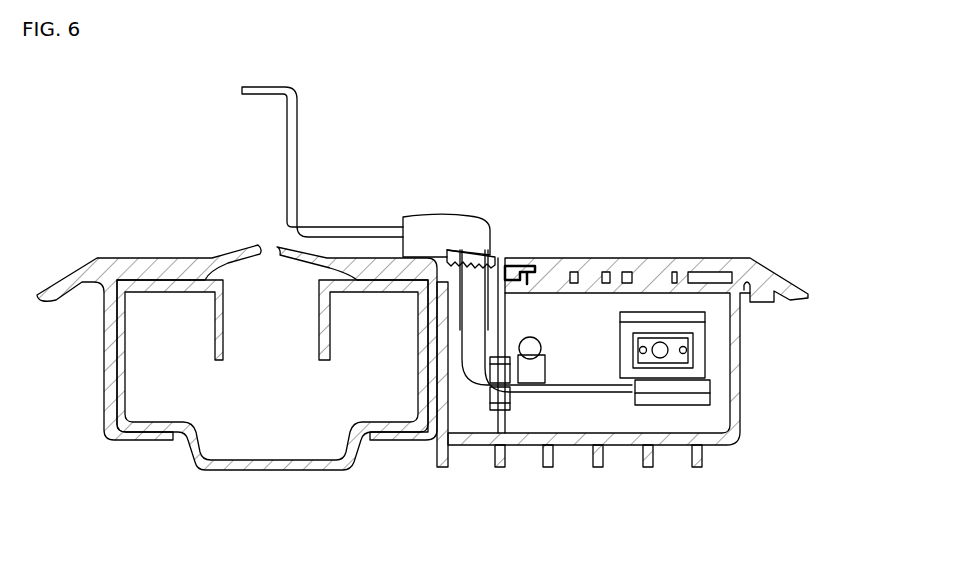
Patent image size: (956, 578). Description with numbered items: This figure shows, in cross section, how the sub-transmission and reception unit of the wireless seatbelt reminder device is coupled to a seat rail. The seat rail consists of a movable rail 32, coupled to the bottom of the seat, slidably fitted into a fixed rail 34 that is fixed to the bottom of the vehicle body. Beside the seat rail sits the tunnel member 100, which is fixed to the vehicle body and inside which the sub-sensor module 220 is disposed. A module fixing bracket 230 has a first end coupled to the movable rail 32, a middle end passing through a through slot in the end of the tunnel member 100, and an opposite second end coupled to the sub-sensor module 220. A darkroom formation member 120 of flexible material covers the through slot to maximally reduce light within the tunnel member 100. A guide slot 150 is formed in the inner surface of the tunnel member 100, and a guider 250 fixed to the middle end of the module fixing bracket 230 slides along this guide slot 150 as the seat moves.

The movable rail 32 is at (157, 262).
The fixed rail 34 is at (158, 426).
The tunnel member 100 is at (667, 448).
The darkroom formation member 120 is at (473, 243).
The guide slot 150 is at (512, 400).
The sub-sensor module 220 is at (698, 350).
The module fixing bracket 230 is at (293, 137).
The guider 250 is at (487, 402).